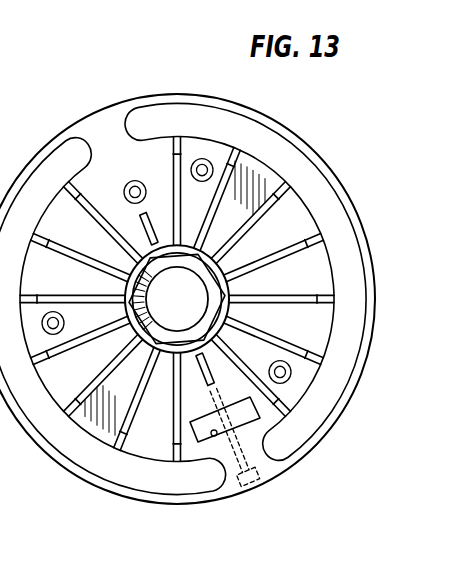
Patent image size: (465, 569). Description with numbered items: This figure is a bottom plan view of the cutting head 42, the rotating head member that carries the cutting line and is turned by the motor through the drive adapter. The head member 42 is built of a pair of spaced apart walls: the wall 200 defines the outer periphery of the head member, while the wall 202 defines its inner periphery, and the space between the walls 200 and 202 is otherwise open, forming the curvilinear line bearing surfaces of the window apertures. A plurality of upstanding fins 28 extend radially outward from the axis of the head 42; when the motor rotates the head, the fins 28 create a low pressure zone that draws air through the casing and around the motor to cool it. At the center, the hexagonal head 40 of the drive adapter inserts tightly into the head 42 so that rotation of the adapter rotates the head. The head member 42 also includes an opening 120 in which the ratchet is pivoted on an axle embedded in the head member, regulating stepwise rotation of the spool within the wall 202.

The cutting head 42 is at (313, 490).
The outer wall 200 is at (103, 108).
The inner wall 202 is at (328, 352).
The upstanding fins 28 is at (273, 218).
The hexagonal head 40 is at (155, 334).
The opening 120 is at (214, 436).